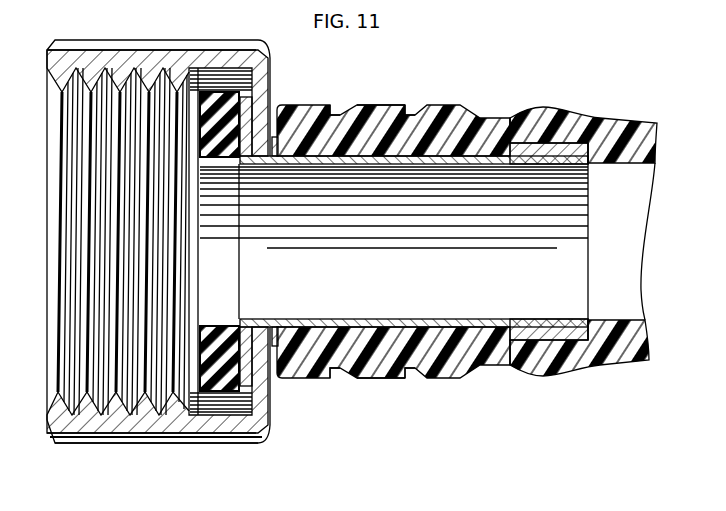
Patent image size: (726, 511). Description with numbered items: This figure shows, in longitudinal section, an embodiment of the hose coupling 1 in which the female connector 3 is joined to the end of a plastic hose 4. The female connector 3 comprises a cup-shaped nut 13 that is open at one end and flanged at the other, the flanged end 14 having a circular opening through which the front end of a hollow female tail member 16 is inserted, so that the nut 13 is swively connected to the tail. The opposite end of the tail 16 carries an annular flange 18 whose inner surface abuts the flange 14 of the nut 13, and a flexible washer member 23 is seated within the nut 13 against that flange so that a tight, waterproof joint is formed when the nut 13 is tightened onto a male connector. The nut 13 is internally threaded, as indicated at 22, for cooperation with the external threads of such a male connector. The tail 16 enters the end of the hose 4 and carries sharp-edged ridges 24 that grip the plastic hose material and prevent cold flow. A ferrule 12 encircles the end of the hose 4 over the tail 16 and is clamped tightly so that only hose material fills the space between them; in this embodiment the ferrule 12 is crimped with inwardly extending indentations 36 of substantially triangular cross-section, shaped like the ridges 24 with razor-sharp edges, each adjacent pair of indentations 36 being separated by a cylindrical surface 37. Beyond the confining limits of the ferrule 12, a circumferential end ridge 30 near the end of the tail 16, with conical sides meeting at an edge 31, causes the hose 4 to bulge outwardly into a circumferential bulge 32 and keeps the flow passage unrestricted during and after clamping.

The hose coupling 1 is at (94, 458).
The female connector 3 is at (161, 453).
The hose 4 is at (580, 123).
The ferrule 12 is at (460, 106).
The nut 13 is at (207, 52).
The flanged end 14 is at (250, 82).
The female tail member 16 is at (414, 198).
The annular flange 18 is at (252, 118).
The internal threads 22 is at (77, 85).
The flexible washer member 23 is at (224, 390).
The ridges 24 is at (370, 160).
The circumferential end ridge 30 is at (547, 150).
The edge 31 is at (540, 143).
The circumferential bulge 32 is at (548, 382).
The indentations 36 is at (340, 107).
The cylindrical surface 37 is at (386, 112).